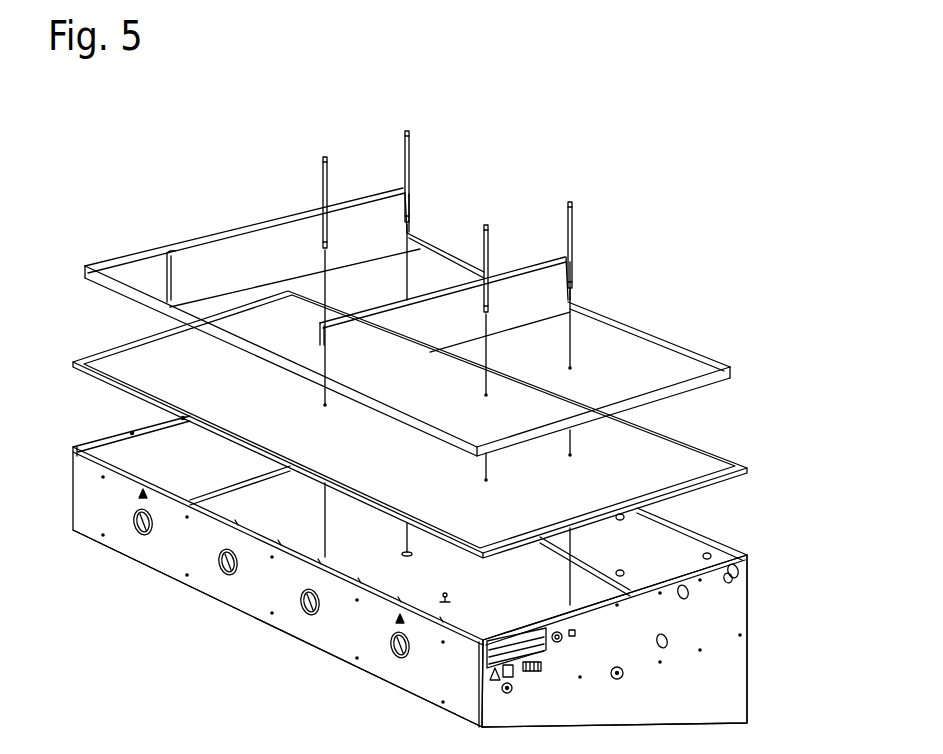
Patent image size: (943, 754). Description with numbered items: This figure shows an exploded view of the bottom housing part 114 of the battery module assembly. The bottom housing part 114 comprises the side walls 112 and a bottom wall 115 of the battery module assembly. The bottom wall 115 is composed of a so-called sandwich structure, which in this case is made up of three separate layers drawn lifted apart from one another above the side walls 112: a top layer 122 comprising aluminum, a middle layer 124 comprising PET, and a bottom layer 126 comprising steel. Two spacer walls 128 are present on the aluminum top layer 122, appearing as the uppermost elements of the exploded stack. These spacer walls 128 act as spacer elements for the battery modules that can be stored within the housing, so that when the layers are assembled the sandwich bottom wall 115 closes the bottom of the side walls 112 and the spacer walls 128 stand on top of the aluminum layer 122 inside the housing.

The side walls 112 is at (215, 652).
The bottom housing part 114 is at (733, 727).
The bottom wall 115 is at (443, 712).
The top layer 122 is at (680, 287).
The middle layer 124 is at (717, 410).
The bottom layer 126 is at (777, 478).
The spacer walls 128 is at (233, 260).